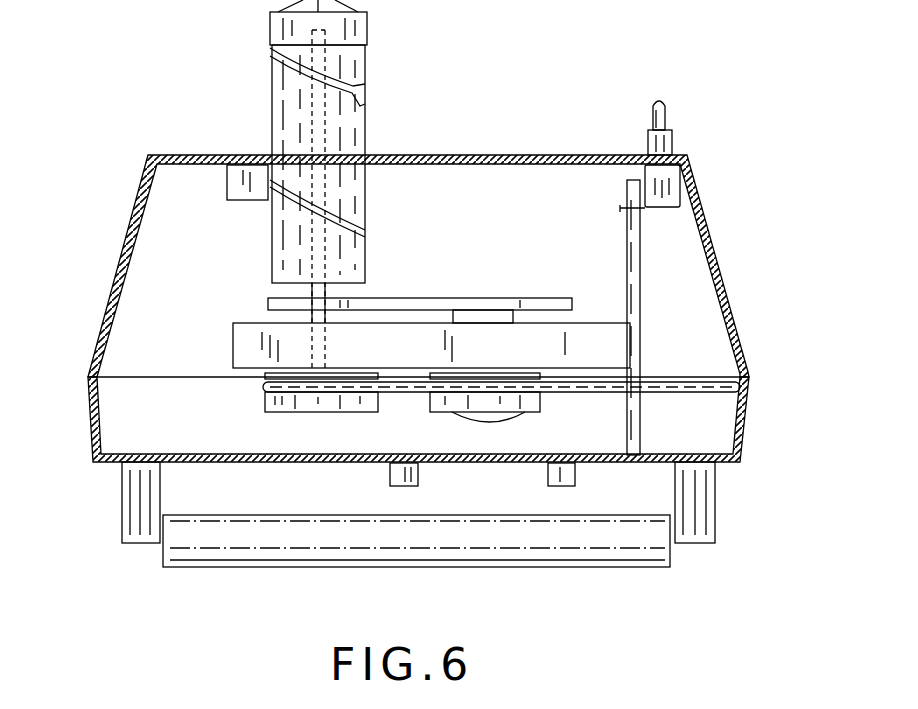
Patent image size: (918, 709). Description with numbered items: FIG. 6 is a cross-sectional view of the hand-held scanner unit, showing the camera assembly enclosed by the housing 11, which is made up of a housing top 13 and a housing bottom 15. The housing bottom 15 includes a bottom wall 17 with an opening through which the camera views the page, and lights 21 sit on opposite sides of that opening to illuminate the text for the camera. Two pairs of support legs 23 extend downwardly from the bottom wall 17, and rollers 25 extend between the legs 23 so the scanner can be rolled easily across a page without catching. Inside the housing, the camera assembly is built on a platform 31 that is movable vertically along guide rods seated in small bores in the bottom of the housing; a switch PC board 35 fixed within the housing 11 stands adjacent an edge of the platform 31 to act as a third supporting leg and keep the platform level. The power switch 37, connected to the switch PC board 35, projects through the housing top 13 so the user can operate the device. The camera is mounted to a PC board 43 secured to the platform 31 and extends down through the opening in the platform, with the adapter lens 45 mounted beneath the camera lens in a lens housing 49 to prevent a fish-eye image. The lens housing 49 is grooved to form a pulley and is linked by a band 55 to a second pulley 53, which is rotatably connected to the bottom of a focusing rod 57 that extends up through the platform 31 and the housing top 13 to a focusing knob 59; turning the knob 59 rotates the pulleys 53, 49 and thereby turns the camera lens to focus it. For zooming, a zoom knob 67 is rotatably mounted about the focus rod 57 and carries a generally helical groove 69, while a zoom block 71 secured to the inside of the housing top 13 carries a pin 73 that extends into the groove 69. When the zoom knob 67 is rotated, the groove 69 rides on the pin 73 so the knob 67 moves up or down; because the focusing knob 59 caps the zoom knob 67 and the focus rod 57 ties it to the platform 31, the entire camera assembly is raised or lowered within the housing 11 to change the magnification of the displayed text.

The housing 11 is at (390, 278).
The housing top 13 is at (128, 255).
The housing bottom 15 is at (90, 438).
The bottom wall 17 is at (275, 465).
The lights 21 is at (395, 478).
The support legs 23 is at (135, 490).
The rollers 25 is at (245, 537).
The platform 31 is at (233, 352).
The switch PC board 35 is at (640, 258).
The power switch 37 is at (668, 113).
The PC board 43 is at (520, 298).
The adapter lens 45 is at (490, 420).
The lens housing 49 is at (540, 400).
The second pulley 53 is at (265, 402).
The band 55 is at (400, 395).
The focusing rod 57 is at (325, 290).
The focusing knob 59 is at (367, 20).
The zoom knob 67 is at (329, 164).
The helical groove 69 is at (372, 106).
The zoom block 71 is at (227, 180).
The pin 73 is at (268, 226).